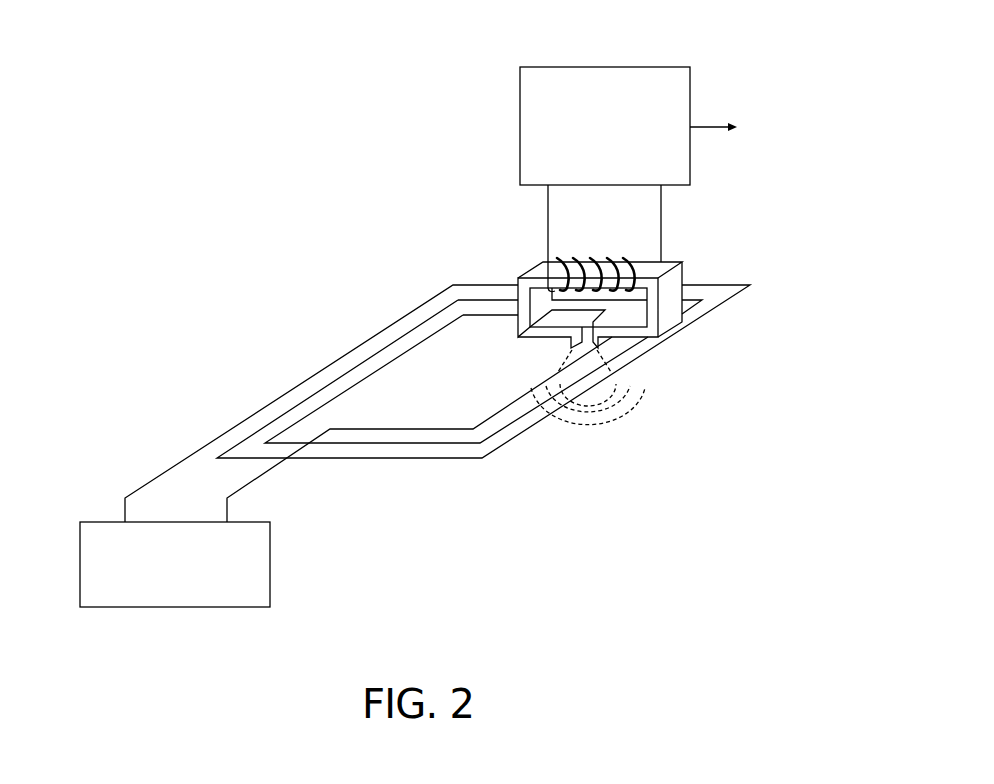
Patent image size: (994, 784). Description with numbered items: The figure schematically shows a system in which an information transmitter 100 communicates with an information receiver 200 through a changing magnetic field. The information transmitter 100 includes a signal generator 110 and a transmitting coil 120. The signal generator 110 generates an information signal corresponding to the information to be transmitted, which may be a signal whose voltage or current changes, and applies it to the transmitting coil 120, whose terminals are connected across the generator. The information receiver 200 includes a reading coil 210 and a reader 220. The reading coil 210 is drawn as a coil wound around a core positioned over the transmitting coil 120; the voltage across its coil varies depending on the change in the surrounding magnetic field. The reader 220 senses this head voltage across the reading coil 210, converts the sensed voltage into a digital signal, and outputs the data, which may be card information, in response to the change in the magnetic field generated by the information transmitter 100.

The information transmitter 100 is at (68, 288).
The signal generator 110 is at (223, 608).
The transmitting coil 120 is at (357, 347).
The information receiver 200 is at (798, 62).
The reading coil 210 is at (686, 274).
The reader 220 is at (645, 67).